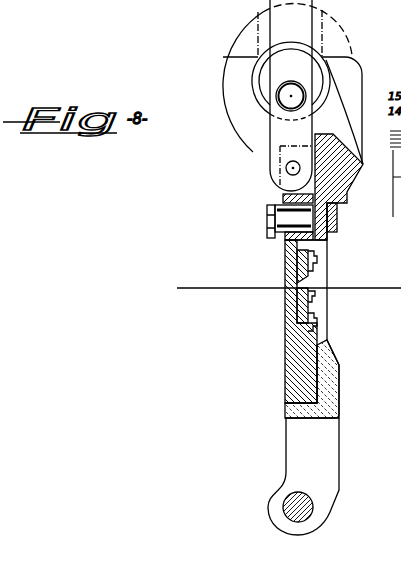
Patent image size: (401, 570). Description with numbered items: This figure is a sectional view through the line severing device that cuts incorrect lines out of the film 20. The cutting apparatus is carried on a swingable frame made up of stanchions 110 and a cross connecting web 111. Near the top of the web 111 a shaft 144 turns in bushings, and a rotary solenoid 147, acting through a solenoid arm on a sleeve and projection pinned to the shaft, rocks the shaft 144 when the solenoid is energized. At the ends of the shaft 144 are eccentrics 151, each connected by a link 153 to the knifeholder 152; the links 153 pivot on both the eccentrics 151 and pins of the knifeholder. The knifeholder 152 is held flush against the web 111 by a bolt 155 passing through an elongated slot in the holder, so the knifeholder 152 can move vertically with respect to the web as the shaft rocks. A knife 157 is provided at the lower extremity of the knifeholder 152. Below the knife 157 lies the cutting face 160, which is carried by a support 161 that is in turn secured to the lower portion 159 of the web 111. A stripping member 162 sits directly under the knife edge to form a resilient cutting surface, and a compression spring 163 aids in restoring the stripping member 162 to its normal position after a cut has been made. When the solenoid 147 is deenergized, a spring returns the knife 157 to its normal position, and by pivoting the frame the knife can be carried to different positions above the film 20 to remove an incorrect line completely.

The film 20 is at (218, 289).
The rotary solenoid 147 is at (336, 41).
The shaft 144 is at (303, 68).
The eccentric 151 is at (282, 100).
The link 153 is at (274, 148).
The web 111 is at (343, 186).
The bolt 155 is at (268, 222).
The knifeholder 152 is at (328, 243).
The knife 157 is at (309, 280).
The cutting face 160 is at (295, 300).
The compression spring 163 is at (310, 298).
The stripping member 162 is at (311, 309).
The support 161 is at (286, 345).
The lower portion of the web 159 is at (334, 383).
The stanchion 110 is at (333, 435).